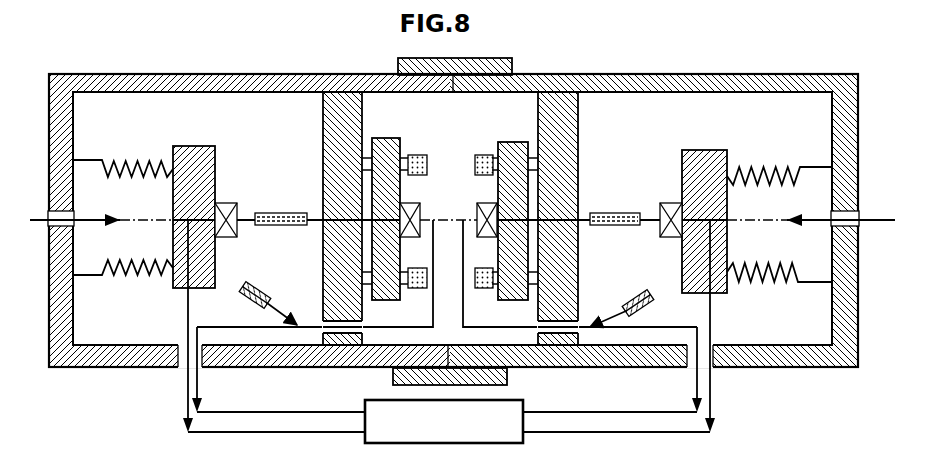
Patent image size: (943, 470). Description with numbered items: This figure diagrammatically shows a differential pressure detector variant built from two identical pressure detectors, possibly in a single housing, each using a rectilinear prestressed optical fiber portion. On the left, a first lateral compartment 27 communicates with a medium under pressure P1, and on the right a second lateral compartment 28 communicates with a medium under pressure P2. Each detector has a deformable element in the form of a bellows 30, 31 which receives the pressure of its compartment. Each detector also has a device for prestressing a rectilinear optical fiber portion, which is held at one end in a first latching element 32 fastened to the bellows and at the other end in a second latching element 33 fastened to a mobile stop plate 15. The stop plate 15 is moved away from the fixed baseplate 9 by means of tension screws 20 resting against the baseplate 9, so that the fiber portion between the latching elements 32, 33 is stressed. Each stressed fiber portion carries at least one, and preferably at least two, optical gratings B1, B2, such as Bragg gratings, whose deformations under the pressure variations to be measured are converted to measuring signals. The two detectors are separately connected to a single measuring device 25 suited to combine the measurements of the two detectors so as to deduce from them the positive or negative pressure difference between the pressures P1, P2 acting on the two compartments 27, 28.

The baseplate 9 is at (342, 123).
The stop plate 15 is at (388, 150).
The tension screws 20 is at (474, 161).
The measuring device 25 is at (431, 436).
The lateral compartment 27 is at (157, 216).
The lateral compartment 28 is at (769, 216).
The bellows 30 is at (137, 160).
The bellows 31 is at (768, 167).
The first latching element 32 is at (229, 203).
The second latching element 33 is at (477, 203).
The first Bragg grating B1 is at (447, 205).
The second Bragg grating B2 is at (446, 299).
The first pressure P1 is at (98, 212).
The second pressure P2 is at (835, 215).